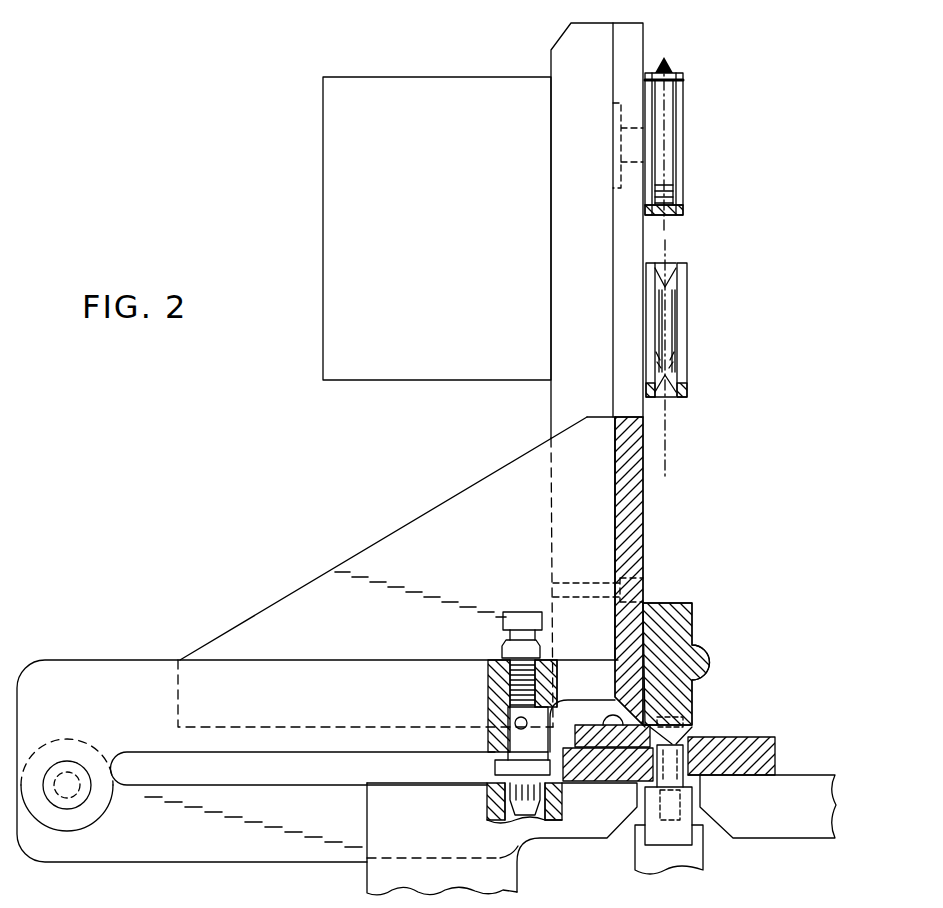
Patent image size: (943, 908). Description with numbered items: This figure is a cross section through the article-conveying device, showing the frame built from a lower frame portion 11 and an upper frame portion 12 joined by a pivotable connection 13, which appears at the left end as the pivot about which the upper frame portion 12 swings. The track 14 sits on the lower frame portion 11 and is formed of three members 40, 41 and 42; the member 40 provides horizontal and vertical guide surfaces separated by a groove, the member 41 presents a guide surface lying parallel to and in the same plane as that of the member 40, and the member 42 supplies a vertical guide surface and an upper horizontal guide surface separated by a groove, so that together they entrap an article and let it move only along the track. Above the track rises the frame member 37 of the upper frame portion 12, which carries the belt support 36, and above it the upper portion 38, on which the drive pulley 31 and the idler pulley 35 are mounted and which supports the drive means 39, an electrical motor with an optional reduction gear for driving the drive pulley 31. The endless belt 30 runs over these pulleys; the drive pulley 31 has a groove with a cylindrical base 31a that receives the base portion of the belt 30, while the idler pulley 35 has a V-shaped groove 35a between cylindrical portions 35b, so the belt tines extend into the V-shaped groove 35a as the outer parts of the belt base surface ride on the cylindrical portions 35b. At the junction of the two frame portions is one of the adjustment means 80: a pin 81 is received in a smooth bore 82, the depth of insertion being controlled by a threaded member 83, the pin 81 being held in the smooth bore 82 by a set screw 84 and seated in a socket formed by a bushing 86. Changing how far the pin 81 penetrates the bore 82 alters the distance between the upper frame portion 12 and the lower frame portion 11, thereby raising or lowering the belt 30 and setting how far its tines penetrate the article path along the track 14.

The lower frame portion 11 is at (367, 870).
The upper frame portion 12 is at (307, 589).
The pivotable connection 13 is at (67, 802).
The track 14 is at (753, 734).
The endless belt 30 is at (677, 74).
The drive pulley 31 is at (684, 153).
The cylindrical base 31a is at (668, 221).
The idler pulley 35 is at (688, 322).
The V-shaped groove 35a is at (672, 388).
The cylindrical portions 35b is at (666, 280).
The belt support 36 is at (692, 605).
The frame member 37 is at (648, 541).
The upper portion 38 is at (557, 47).
The drive means 39 is at (414, 278).
The track member 40 is at (776, 758).
The track member 41 is at (596, 782).
The track member 42 is at (605, 722).
The adjustment means 80 is at (498, 607).
The pin 81 is at (508, 766).
The smooth bore 82 is at (492, 700).
The threaded member 83 is at (540, 668).
The set screw 84 is at (527, 718).
The bushing 86 is at (490, 795).